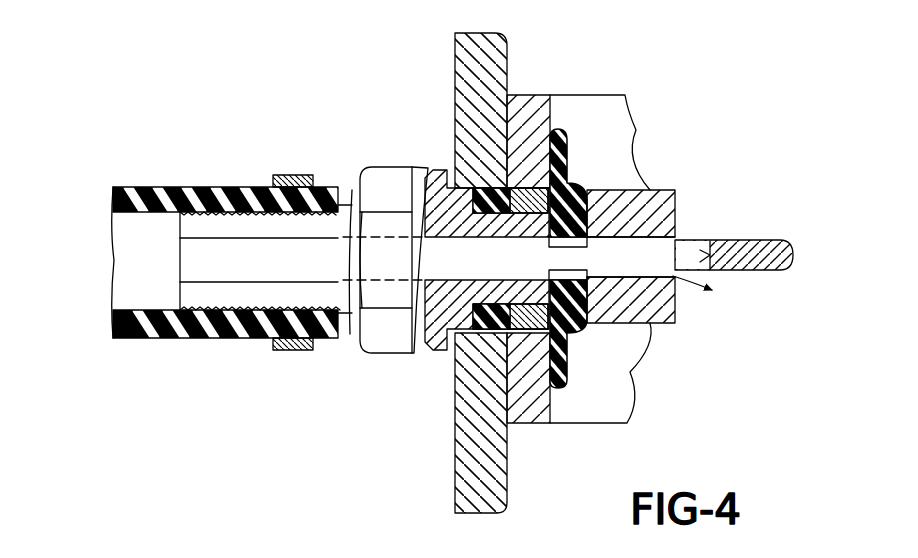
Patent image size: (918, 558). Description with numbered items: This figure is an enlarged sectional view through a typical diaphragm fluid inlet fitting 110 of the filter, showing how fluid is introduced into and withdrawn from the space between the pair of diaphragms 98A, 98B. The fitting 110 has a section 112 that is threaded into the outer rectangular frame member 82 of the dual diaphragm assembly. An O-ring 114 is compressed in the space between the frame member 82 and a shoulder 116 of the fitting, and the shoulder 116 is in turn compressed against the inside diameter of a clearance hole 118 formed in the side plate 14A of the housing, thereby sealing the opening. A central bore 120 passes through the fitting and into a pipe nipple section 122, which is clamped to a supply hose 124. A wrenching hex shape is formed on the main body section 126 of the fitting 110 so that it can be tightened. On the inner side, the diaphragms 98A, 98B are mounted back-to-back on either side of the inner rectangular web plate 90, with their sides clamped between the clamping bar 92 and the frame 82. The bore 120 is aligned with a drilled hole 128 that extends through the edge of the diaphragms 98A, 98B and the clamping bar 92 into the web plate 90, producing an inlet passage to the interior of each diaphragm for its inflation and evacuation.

The fitting 110 is at (303, 93).
The side plate 14A is at (455, 53).
The outer rectangular frame 82 is at (520, 180).
The inner rectangular web plate 90 is at (778, 240).
The clamping bar 92 is at (627, 192).
The diaphragm 98A is at (568, 152).
The diaphragm 98B is at (572, 370).
The threaded section 112 is at (553, 150).
The O-ring 114 is at (498, 185).
The shoulder 116 is at (473, 178).
The clearance hole 118 is at (470, 340).
The central bore 120 is at (481, 268).
The pipe nipple section 122 is at (228, 200).
The supply hose 124 is at (180, 150).
The main body section 126 is at (370, 359).
The drilled hole 128 is at (620, 258).